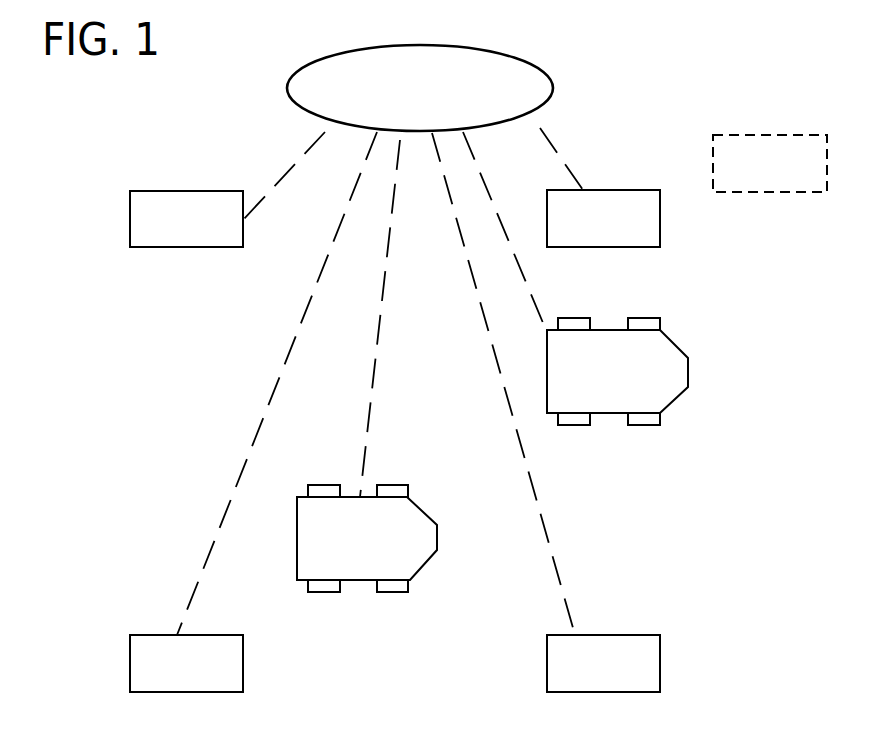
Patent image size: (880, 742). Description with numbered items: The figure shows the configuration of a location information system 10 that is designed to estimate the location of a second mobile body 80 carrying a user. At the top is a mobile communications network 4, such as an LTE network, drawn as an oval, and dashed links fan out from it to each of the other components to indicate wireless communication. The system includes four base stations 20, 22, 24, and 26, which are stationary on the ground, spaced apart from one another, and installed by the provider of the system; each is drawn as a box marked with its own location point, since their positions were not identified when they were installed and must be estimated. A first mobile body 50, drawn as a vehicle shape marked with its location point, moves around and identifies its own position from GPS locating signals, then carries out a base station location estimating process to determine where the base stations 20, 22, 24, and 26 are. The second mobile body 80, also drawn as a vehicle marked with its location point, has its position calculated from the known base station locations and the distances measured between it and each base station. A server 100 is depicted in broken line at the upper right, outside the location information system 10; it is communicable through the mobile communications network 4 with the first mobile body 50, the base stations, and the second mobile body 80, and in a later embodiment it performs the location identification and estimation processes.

The mobile communications network 4 is at (533, 61).
The location information system 10 is at (673, 92).
The base station 20 is at (215, 191).
The base station 22 is at (630, 190).
The base station 24 is at (215, 635).
The base station 26 is at (630, 635).
The first mobile body 50 is at (673, 340).
The second mobile body 80 is at (420, 503).
The server 100 is at (797, 135).